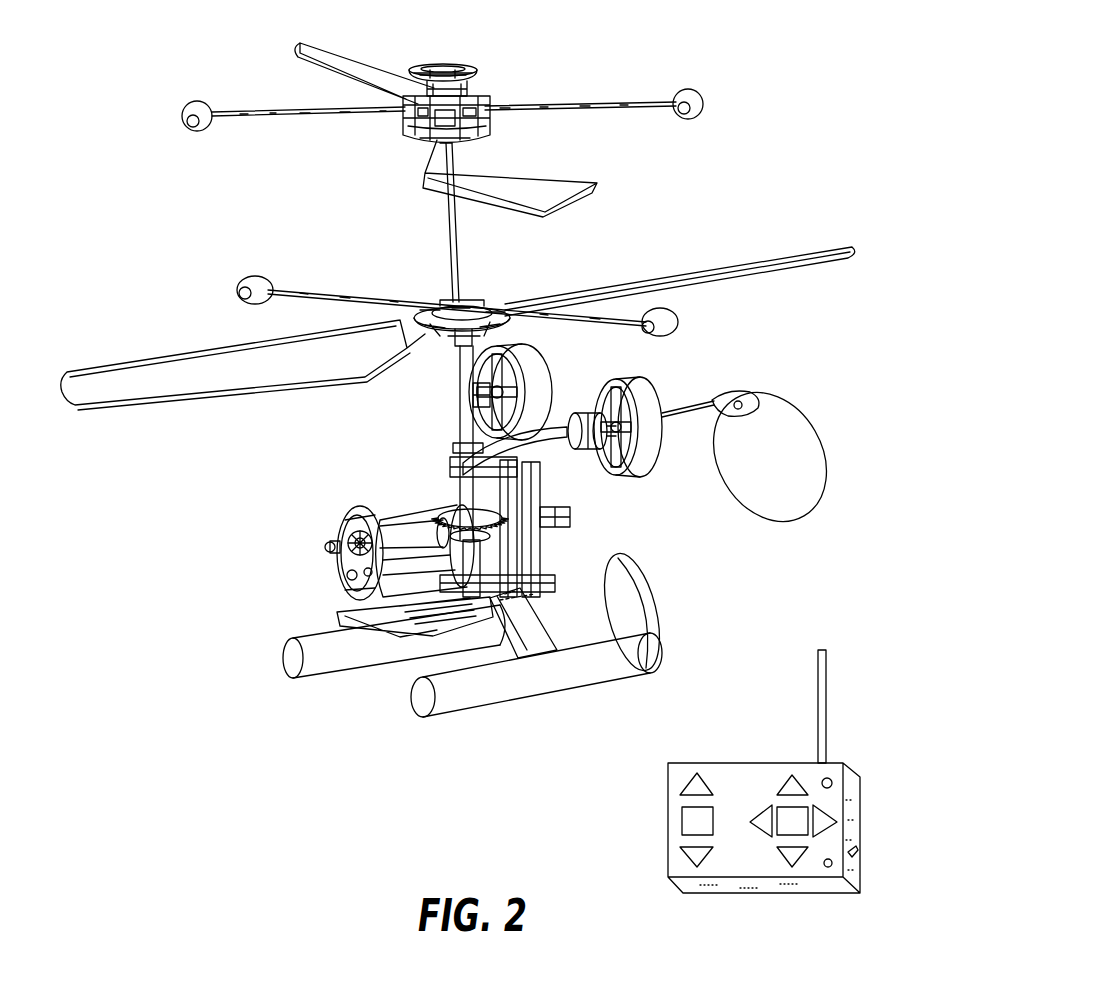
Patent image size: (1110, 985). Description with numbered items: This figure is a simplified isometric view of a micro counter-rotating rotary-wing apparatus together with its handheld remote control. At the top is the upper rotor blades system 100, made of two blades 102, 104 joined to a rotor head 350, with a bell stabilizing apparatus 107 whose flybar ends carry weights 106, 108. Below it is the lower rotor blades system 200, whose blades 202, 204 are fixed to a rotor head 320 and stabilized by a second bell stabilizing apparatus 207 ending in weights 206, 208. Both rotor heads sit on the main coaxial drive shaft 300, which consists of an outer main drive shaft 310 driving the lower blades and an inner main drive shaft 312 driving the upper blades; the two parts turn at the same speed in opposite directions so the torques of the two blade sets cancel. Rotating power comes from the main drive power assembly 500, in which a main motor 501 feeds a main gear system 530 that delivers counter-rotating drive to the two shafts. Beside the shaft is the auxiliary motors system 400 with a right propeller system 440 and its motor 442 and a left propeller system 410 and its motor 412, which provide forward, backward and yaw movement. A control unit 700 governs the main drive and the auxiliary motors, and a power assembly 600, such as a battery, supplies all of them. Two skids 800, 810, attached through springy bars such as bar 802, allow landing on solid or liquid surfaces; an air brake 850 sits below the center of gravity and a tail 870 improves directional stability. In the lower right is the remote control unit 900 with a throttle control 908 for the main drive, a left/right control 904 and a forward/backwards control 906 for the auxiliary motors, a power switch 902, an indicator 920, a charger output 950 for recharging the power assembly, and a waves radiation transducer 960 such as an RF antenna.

The upper rotor blades system 100 is at (300, 48).
The upper blade 102 is at (545, 173).
The upper blade 104 is at (352, 62).
The flybar weight 106 is at (691, 92).
The bell stabilizing apparatus 107 is at (330, 106).
The flybar weight 108 is at (200, 102).
The lower rotor blades system 200 is at (126, 364).
The lower blade 202 is at (782, 260).
The lower blade 204 is at (163, 362).
The flybar weight 206 is at (664, 330).
The bell stabilizing apparatus 207 is at (346, 290).
The flybar weight 208 is at (252, 288).
The main coaxial drive shaft 300 is at (452, 262).
The outer main drive shaft 310 is at (464, 426).
The inner main drive shaft 312 is at (450, 215).
The rotor head 320 is at (492, 308).
The rotor head 350 is at (470, 66).
The auxiliary motors system 400 is at (556, 373).
The left propeller system 410 is at (650, 468).
The motor 412 is at (592, 449).
The right propeller system 440 is at (540, 368).
The motor 442 is at (472, 390).
The main drive power assembly 500 is at (343, 520).
The main motor 501 is at (437, 590).
The main gear system 530 is at (425, 518).
The power assembly 600 is at (350, 613).
The control unit 700 is at (548, 560).
The skid 800 is at (553, 688).
The bar 802 is at (548, 648).
The skid 810 is at (330, 665).
The air brake 850 is at (640, 598).
The tail 870 is at (784, 418).
The remote control unit 900 is at (768, 763).
The power switch 902 is at (832, 866).
The left/right control 904 is at (768, 822).
The forward/backwards control 906 is at (787, 793).
The throttle control 908 is at (700, 776).
The indicator 920 is at (831, 787).
The charger output 950 is at (856, 848).
The waves radiation transducer 960 is at (820, 700).